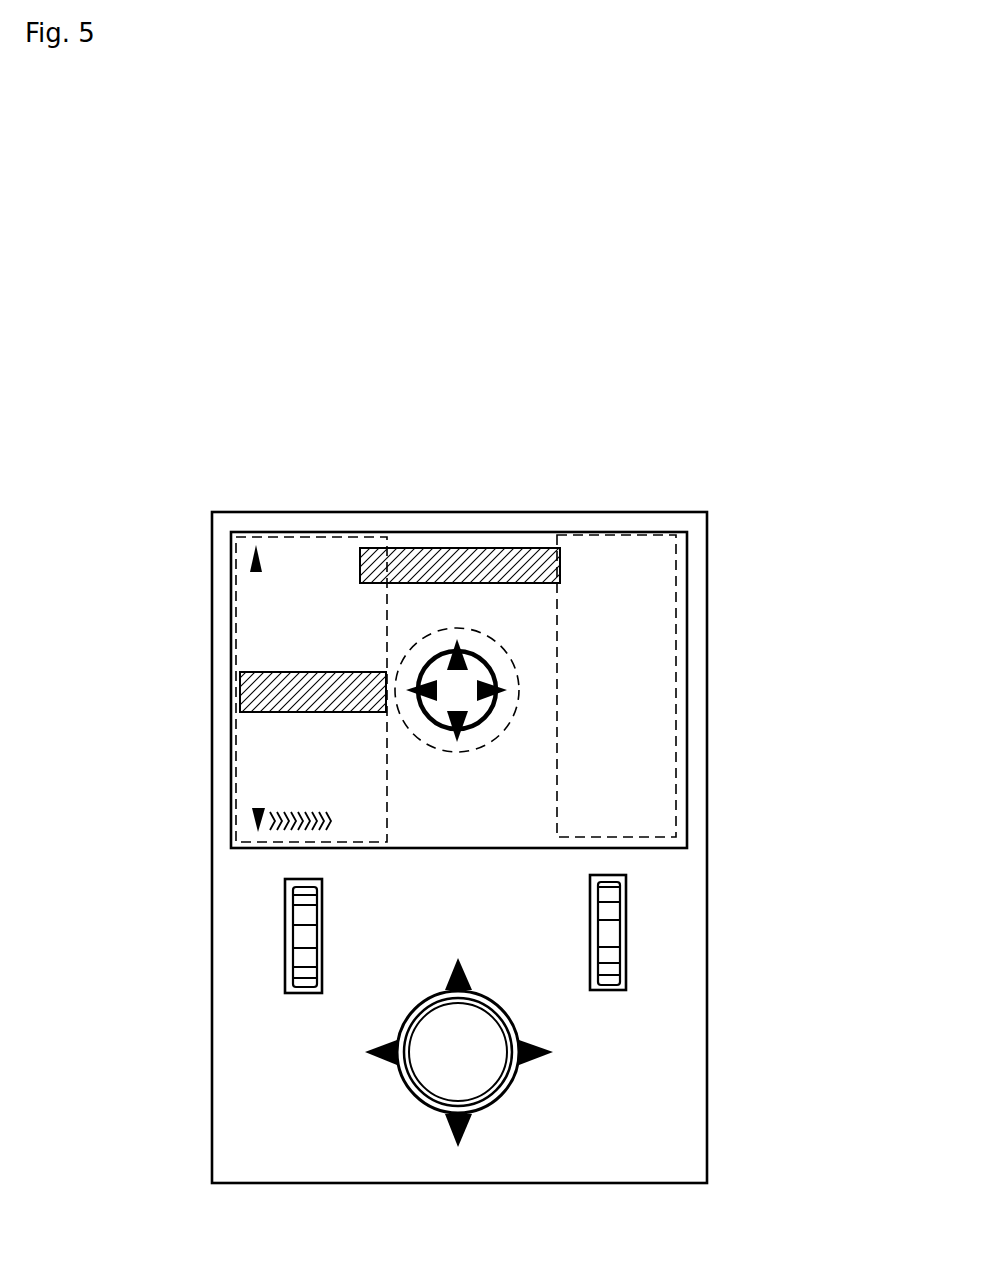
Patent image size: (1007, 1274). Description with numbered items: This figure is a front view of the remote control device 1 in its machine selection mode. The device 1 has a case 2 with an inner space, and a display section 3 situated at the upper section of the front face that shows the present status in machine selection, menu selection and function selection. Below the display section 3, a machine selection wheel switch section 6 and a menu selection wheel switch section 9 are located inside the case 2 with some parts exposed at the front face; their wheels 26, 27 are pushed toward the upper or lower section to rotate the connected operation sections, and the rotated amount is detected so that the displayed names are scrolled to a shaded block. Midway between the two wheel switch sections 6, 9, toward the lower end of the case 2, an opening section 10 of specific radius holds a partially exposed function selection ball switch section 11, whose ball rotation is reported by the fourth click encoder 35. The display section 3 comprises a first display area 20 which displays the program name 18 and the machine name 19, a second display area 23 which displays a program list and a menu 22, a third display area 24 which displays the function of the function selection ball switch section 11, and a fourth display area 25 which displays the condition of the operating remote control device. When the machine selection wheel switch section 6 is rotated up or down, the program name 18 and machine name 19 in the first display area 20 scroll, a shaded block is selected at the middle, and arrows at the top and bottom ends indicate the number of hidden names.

The remote control device 1 is at (243, 442).
The case 2 is at (617, 1124).
The display section 3 is at (520, 825).
The machine selection wheel switch section 6 is at (273, 980).
The menu selection wheel switch section 9 is at (647, 990).
The opening section 10 is at (423, 1092).
The function selection ball switch section 11 is at (399, 1096).
The program name 18 is at (290, 590).
The machine name 19 is at (258, 776).
The first display area 20 is at (240, 803).
The menu 22 is at (627, 600).
The second display area 23 is at (680, 706).
The third display area 24 is at (520, 688).
The fourth display area 25 is at (478, 585).
The wheel 26 is at (298, 930).
The wheel 27 is at (610, 915).
The fourth click encoder 35 is at (485, 1068).